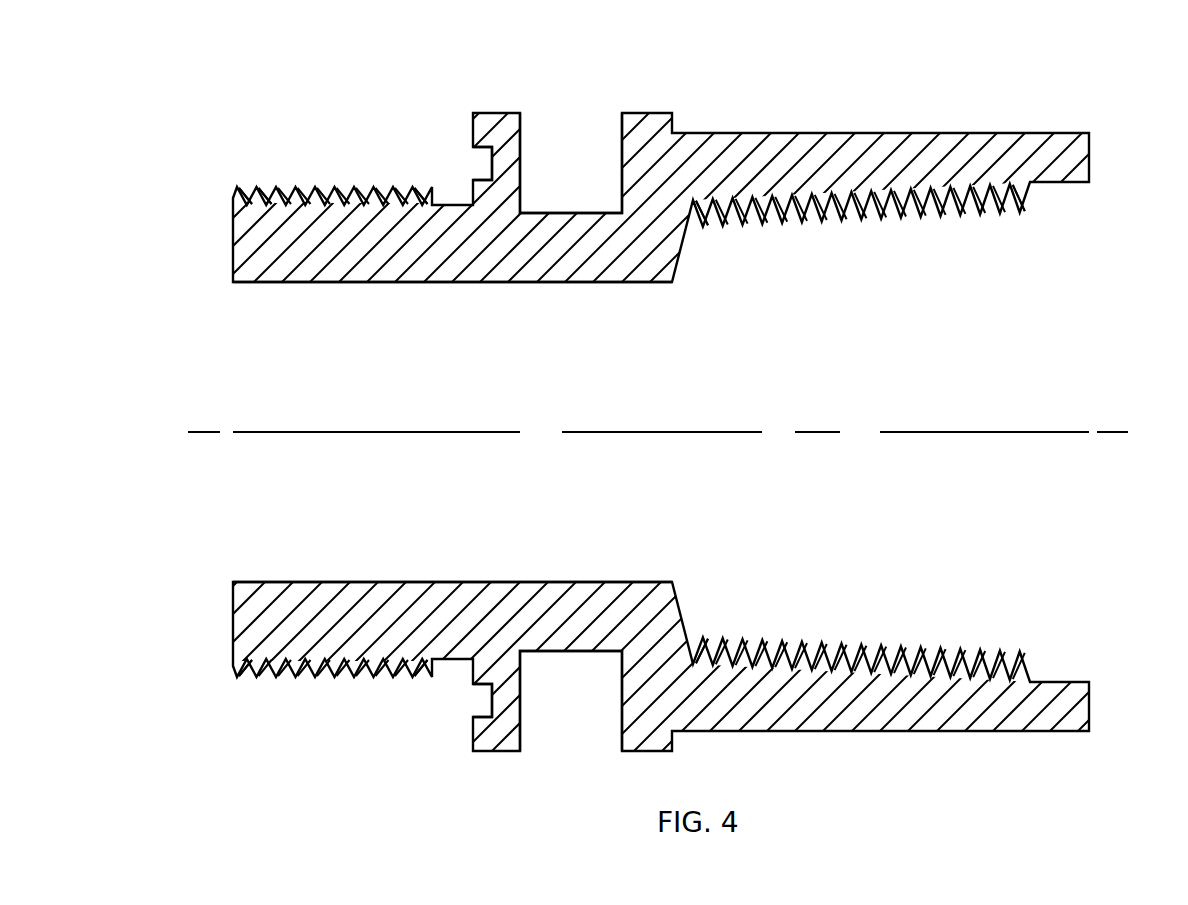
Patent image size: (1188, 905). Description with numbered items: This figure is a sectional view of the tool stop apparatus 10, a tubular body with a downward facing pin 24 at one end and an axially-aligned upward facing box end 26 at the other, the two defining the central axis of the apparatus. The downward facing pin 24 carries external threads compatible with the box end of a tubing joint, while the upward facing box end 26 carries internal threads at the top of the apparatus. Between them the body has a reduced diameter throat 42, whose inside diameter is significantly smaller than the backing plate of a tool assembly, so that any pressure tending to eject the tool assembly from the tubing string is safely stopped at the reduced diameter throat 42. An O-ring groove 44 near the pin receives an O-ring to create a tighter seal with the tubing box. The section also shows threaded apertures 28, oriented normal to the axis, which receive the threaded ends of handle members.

The tool stop apparatus 10 is at (759, 98).
The downward facing pin 24 is at (252, 168).
The upward facing box end 26 is at (1075, 208).
The threaded apertures 28 is at (575, 125).
The reduced diameter throat 42 is at (267, 573).
The O-ring groove 44 is at (472, 160).